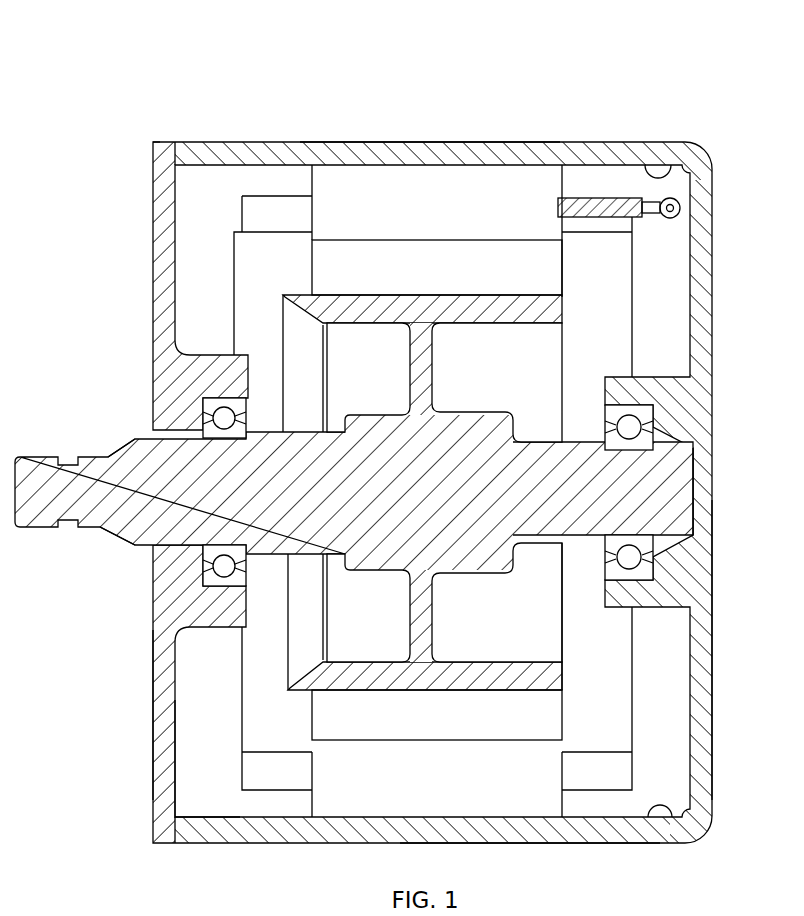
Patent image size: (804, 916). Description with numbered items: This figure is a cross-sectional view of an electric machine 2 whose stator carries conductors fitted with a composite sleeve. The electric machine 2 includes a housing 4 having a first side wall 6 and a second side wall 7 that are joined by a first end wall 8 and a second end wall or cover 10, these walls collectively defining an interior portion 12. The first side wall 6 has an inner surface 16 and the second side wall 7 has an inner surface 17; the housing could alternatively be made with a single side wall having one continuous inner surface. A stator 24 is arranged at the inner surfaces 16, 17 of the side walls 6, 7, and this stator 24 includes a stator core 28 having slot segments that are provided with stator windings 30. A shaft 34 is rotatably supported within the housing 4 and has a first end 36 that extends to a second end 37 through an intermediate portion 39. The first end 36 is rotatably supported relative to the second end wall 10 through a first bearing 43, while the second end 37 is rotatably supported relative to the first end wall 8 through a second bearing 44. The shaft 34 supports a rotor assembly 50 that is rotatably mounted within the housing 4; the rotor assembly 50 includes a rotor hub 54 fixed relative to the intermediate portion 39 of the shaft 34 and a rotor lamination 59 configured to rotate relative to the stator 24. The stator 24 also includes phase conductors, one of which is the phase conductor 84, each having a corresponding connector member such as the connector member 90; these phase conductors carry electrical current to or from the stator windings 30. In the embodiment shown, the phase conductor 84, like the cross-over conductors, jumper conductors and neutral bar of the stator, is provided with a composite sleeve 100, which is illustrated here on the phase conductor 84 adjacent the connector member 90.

The electric machine 2 is at (86, 76).
The housing 4 is at (314, 140).
The first side wall 6 is at (418, 142).
The second side wall 7 is at (575, 845).
The first end wall 8 is at (713, 648).
The second end wall or cover 10 is at (153, 704).
The interior portion 12 is at (193, 800).
The inner surface 16 is at (676, 176).
The inner surface 17 is at (668, 815).
The stator 24 is at (397, 457).
The stator core 28 is at (472, 192).
The stator windings 30 is at (226, 200).
The shaft 34 is at (54, 428).
The first end 36 is at (198, 508).
The second end 37 is at (666, 500).
The intermediate portion 39 is at (519, 522).
The first bearing 43 is at (222, 418).
The second bearing 44 is at (630, 427).
The rotor assembly 50 is at (470, 508).
The rotor hub 54 is at (442, 355).
The rotor lamination 59 is at (417, 274).
The phase conductor 84 is at (640, 230).
The connector member 90 is at (680, 210).
The composite sleeve 100 is at (659, 198).